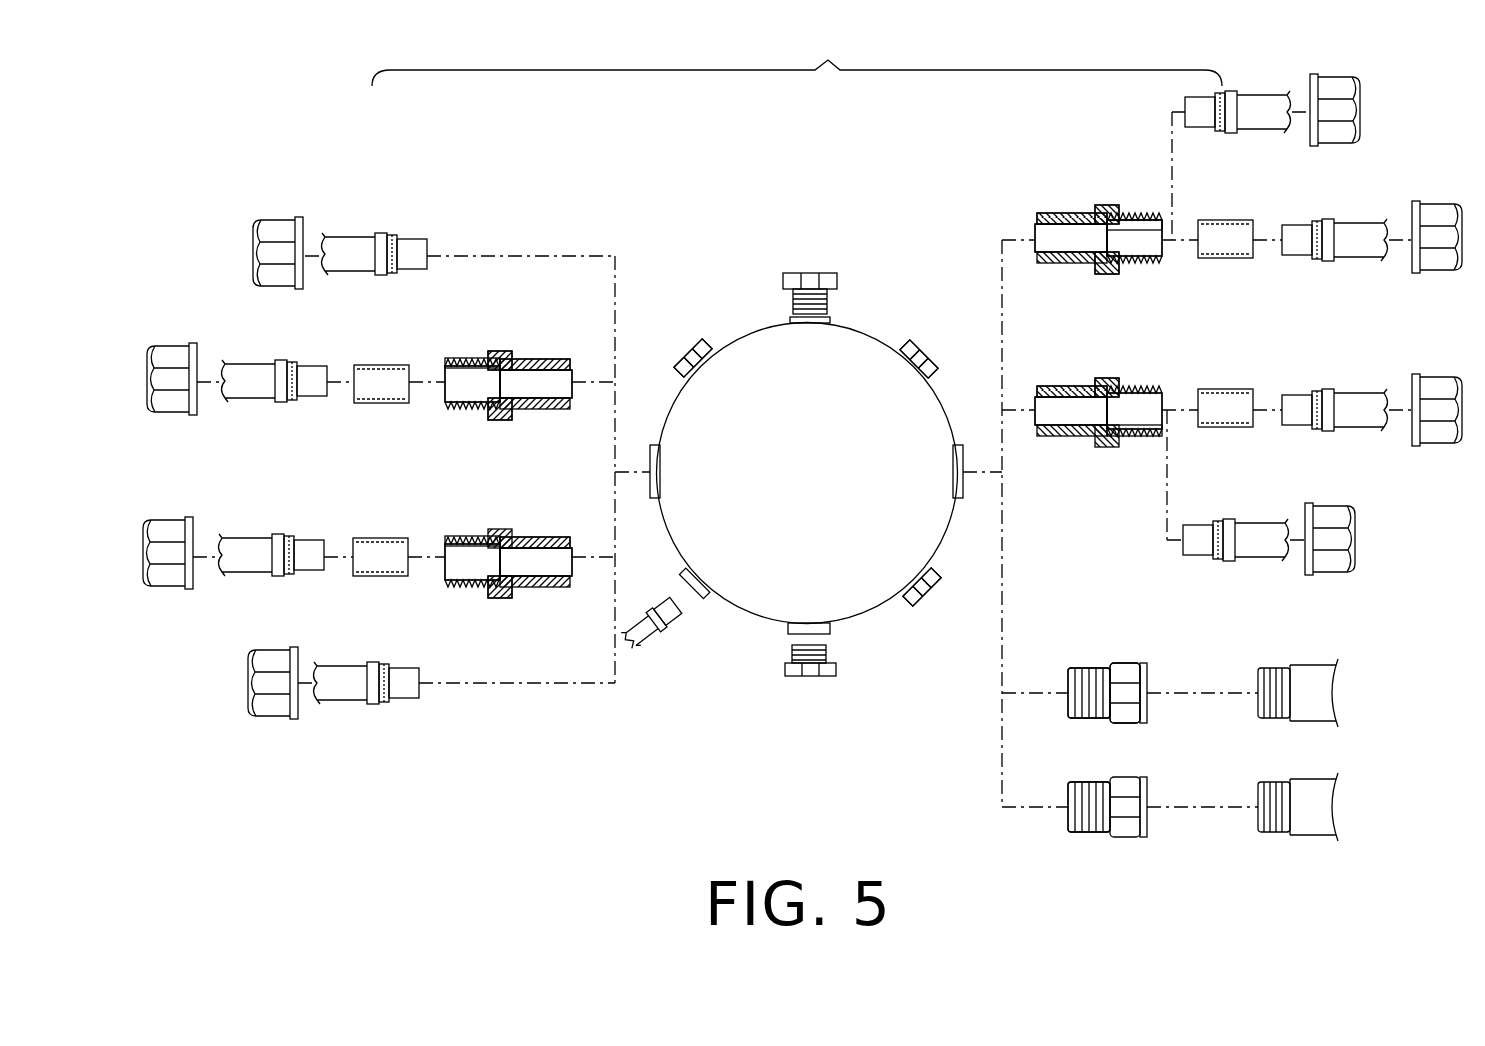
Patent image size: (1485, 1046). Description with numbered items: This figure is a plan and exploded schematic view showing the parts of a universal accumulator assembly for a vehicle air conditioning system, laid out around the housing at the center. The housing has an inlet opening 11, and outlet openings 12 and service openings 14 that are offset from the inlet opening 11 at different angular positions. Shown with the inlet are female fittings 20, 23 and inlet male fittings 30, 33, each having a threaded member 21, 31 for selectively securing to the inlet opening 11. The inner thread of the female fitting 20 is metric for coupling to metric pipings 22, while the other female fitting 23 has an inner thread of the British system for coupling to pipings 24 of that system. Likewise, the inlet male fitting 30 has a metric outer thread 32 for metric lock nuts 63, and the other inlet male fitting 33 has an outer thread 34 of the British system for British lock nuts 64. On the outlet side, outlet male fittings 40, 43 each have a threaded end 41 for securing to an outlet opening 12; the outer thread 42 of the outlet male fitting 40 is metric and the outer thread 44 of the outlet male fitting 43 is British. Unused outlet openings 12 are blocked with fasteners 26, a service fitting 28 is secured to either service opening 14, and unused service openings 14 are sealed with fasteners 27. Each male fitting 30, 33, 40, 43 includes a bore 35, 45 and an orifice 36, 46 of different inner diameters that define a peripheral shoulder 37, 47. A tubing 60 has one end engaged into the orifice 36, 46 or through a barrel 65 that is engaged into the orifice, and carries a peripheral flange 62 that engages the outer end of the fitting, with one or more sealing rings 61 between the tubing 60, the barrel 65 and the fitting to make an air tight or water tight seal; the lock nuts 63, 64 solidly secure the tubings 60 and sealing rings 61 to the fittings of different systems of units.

The inlet opening 11 is at (955, 500).
The outlet opening 12 is at (652, 445).
The service opening 14 is at (686, 370).
The female fitting 20 is at (1125, 833).
The threaded member 21 is at (1090, 668).
The metric pipings 22 is at (1275, 833).
The female fitting 23 is at (1125, 665).
The pipings 24 is at (1275, 718).
The fastener 26 is at (818, 280).
The fastener 27 is at (690, 348).
The service fitting 28 is at (645, 636).
The inlet male fitting 30 is at (1108, 445).
The threaded member 31 is at (1070, 212).
The outer thread 32 is at (1135, 437).
The inlet male fitting 33 is at (1105, 206).
The outer thread 34 is at (1135, 220).
The bore 35 is at (1068, 255).
The orifice 36 is at (1145, 262).
The peripheral shoulder 37 is at (1115, 272).
The outlet male fitting 40 is at (500, 528).
The threaded end 41 is at (556, 362).
The outer thread 42 is at (468, 534).
The outlet male fitting 43 is at (505, 354).
The outer thread 44 is at (470, 360).
The bore 45 is at (565, 384).
The orifice 46 is at (472, 400).
The peripheral shoulder 47 is at (500, 420).
The tubing 60 is at (352, 240).
The sealing ring 61 is at (393, 268).
The peripheral flange 62 is at (382, 234).
The metric lock nut 63 is at (172, 578).
The British lock nut 64 is at (273, 268).
The barrel 65 is at (385, 403).